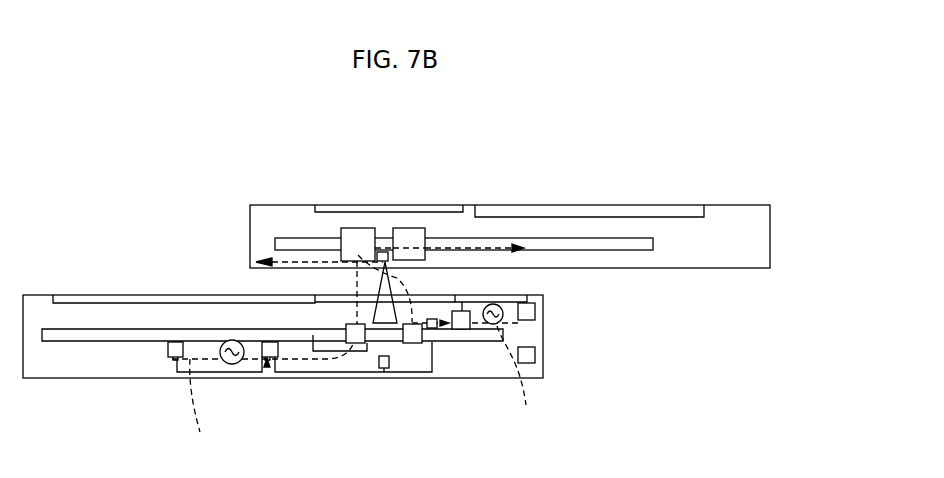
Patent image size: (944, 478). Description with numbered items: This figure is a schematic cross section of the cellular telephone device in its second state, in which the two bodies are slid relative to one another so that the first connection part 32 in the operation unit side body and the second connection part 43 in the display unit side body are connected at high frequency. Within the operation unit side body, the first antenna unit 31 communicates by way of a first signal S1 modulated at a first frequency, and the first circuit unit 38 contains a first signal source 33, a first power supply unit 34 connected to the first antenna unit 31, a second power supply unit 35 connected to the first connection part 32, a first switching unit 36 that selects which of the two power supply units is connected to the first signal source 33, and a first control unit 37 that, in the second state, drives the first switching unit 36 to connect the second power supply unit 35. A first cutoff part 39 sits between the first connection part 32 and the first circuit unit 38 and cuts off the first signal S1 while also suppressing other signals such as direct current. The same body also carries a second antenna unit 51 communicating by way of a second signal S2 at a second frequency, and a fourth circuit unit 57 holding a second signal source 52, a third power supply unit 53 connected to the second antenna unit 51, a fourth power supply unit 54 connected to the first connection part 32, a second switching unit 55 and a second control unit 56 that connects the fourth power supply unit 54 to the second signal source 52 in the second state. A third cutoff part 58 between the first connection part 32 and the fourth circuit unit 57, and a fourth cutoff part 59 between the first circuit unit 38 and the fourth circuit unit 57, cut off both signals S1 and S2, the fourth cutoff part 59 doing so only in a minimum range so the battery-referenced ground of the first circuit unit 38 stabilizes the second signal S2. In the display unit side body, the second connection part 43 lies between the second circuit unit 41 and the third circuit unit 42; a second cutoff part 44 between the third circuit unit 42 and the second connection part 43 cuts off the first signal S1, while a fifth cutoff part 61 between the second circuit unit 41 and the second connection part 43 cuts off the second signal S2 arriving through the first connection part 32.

The first antenna unit 31 is at (533, 354).
The first connection part 32 is at (372, 292).
The first signal source 33 is at (228, 366).
The first power supply unit 34 is at (334, 374).
The second power supply unit 35 is at (304, 374).
The first switching unit 36 is at (276, 362).
The first control unit 37 is at (175, 362).
The first circuit unit 38 is at (87, 338).
The first cutoff part 39 is at (345, 327).
The second circuit unit 41 is at (497, 246).
The third circuit unit 42 is at (294, 247).
The second connection part 43 is at (386, 250).
The second cutoff part 44 is at (357, 237).
The second antenna unit 51 is at (533, 308).
The second signal source 52 is at (503, 322).
The third power supply unit 53 is at (505, 297).
The fourth power supply unit 54 is at (412, 294).
The second switching unit 55 is at (453, 344).
The second control unit 56 is at (430, 344).
The fourth circuit unit 57 is at (490, 340).
The third cutoff part 58 is at (407, 345).
The fourth cutoff part 59 is at (383, 370).
The fifth cutoff part 61 is at (411, 237).
The first signal S1 is at (262, 402).
The second signal S2 is at (478, 379).